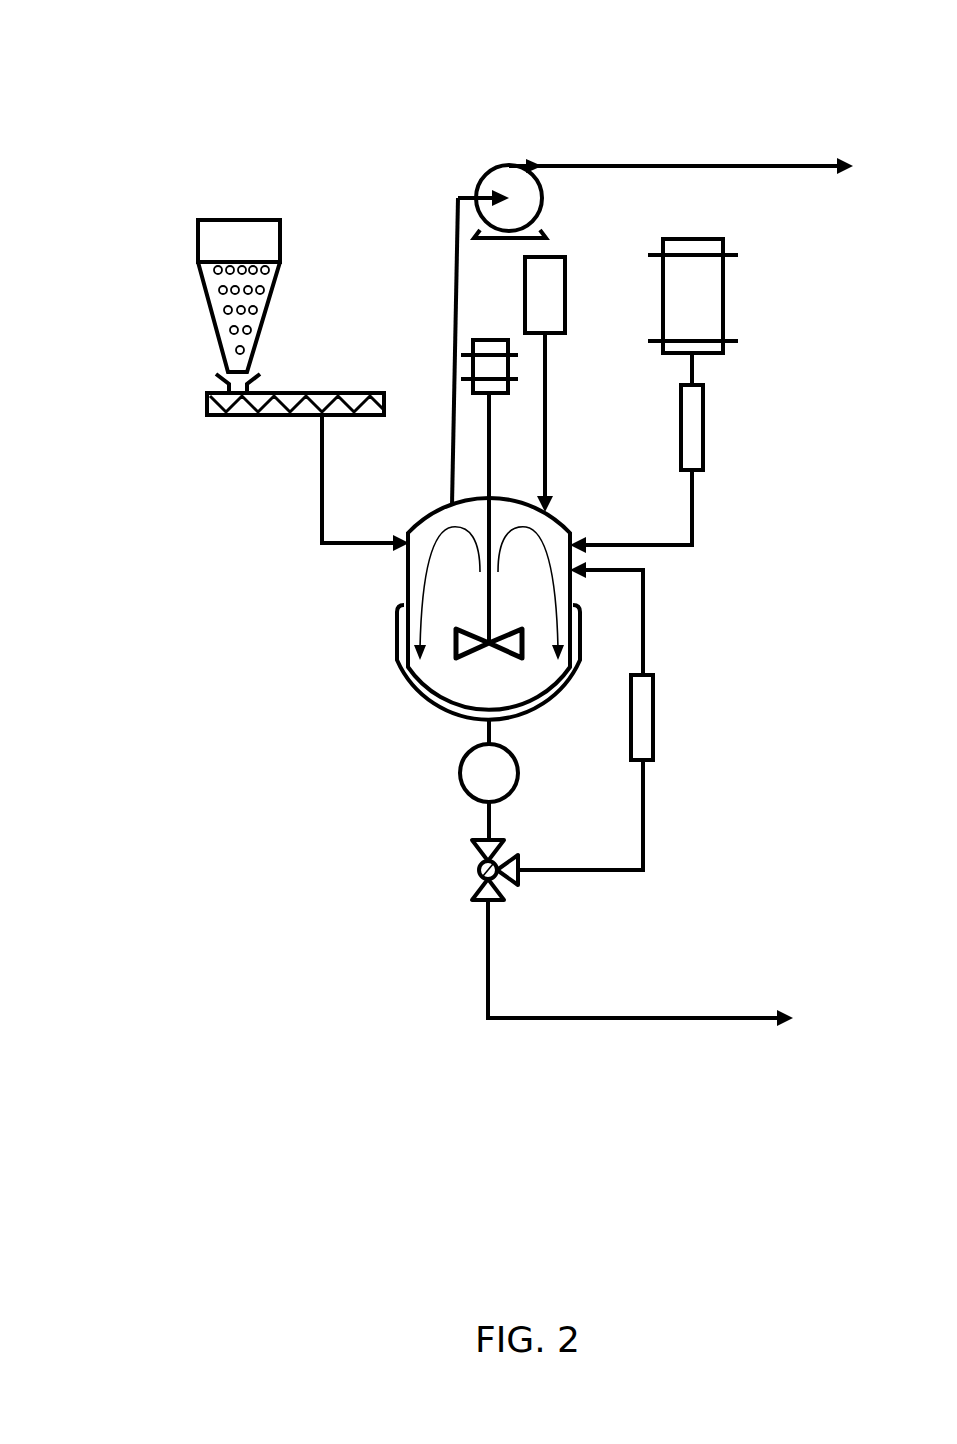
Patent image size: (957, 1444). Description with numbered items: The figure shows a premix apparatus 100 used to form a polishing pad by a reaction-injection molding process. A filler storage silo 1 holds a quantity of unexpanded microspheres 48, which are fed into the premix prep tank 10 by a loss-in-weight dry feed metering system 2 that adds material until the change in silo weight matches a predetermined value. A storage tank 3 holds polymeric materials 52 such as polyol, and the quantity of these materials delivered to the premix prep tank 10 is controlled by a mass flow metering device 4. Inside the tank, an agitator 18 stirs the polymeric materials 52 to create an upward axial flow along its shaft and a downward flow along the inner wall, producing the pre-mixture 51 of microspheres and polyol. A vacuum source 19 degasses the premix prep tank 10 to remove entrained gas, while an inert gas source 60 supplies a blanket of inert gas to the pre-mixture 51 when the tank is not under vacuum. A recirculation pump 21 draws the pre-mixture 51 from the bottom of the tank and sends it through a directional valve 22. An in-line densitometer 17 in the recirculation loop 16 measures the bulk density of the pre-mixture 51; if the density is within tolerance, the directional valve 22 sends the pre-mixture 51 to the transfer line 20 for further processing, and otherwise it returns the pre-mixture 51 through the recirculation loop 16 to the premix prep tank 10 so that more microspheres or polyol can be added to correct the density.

The premix apparatus 100 is at (230, 115).
The filler storage silo 1 is at (188, 232).
The unexpanded microspheres 48 is at (229, 318).
The dry feed metering system 2 is at (340, 393).
The vacuum source 19 is at (502, 176).
The inert gas source 60 is at (548, 307).
The storage tank 3 is at (742, 237).
The polymeric materials 52 is at (700, 322).
The mass flow metering device 4 is at (693, 445).
The agitator 18 is at (472, 516).
The premix prep tank 10 is at (383, 665).
The pre-mixture 51 is at (445, 678).
The recirculation loop 16 is at (700, 633).
The in-line densitometer 17 is at (640, 733).
The recirculation pump 21 is at (473, 777).
The directional valve 22 is at (478, 879).
The transfer line 20 is at (503, 987).